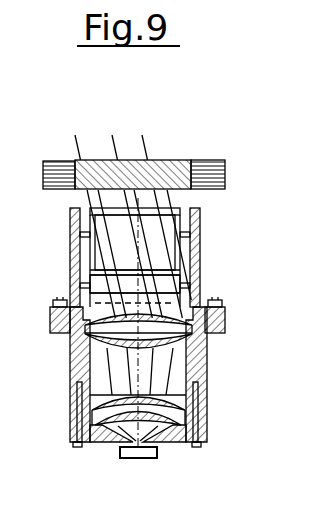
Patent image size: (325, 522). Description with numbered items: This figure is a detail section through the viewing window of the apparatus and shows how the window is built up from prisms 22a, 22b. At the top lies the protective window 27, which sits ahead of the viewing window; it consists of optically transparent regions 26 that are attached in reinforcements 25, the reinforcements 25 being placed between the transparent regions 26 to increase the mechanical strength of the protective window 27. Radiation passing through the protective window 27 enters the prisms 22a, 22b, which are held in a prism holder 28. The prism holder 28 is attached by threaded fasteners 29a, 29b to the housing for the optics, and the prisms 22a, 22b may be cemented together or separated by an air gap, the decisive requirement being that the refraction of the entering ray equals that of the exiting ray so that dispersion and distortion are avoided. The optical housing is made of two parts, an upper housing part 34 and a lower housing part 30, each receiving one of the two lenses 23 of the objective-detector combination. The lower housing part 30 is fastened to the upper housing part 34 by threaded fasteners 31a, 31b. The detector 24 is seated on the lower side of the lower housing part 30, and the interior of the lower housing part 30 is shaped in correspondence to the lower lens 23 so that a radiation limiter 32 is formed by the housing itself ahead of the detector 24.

The protective window 27 is at (122, 128).
The optically transparent regions 26 is at (183, 160).
The reinforcements 25 is at (222, 171).
The prism 22a is at (172, 244).
The prism 22b is at (172, 244).
The prism holder 28 is at (197, 254).
The threaded fastener 29a is at (216, 302).
The threaded fastener 29b is at (58, 303).
The upper housing part 34 is at (206, 350).
The lenses 23 is at (207, 397).
The lower housing part 30 is at (208, 424).
The threaded fastener 31a is at (203, 446).
The threaded fastener 31b is at (72, 446).
The radiation limiter 32 is at (118, 433).
The detector 24 is at (152, 458).